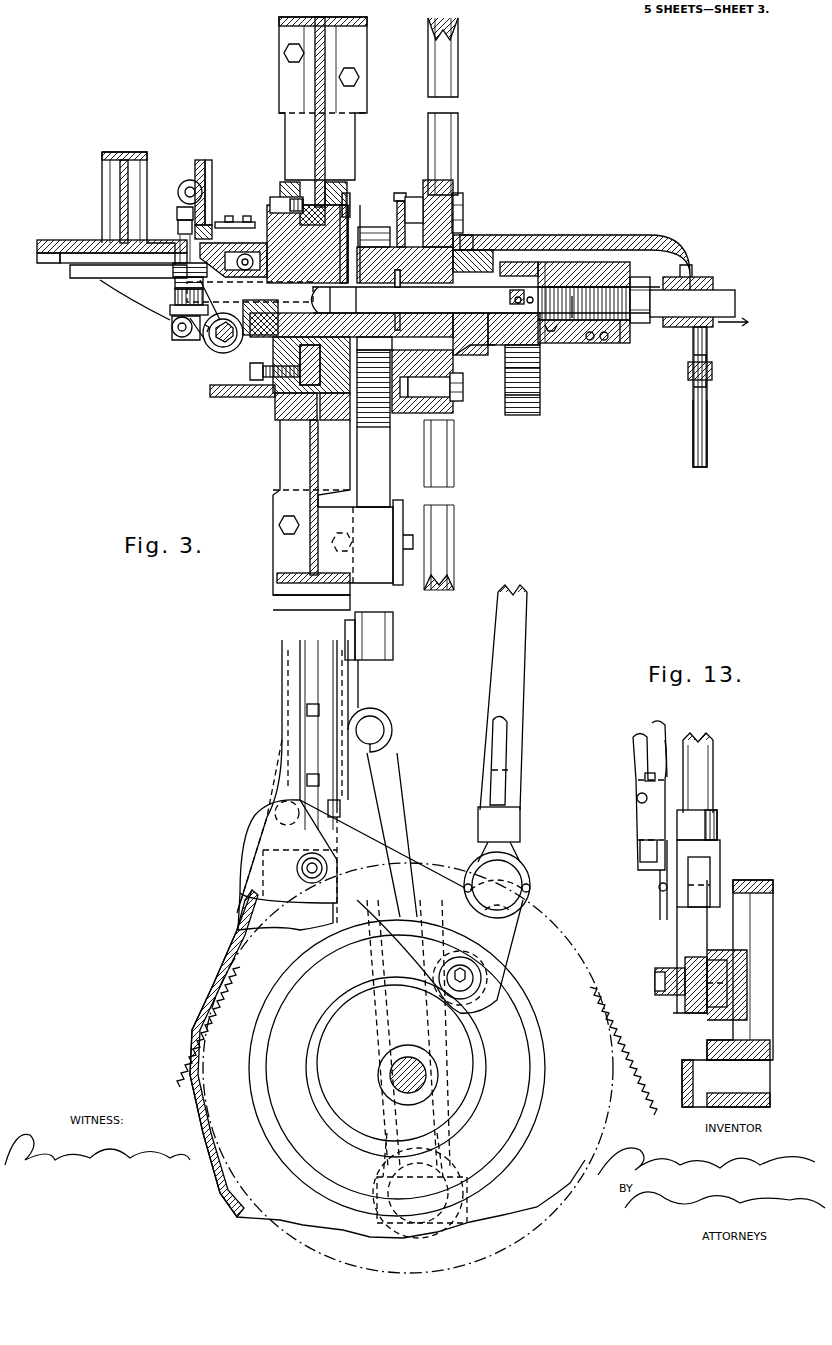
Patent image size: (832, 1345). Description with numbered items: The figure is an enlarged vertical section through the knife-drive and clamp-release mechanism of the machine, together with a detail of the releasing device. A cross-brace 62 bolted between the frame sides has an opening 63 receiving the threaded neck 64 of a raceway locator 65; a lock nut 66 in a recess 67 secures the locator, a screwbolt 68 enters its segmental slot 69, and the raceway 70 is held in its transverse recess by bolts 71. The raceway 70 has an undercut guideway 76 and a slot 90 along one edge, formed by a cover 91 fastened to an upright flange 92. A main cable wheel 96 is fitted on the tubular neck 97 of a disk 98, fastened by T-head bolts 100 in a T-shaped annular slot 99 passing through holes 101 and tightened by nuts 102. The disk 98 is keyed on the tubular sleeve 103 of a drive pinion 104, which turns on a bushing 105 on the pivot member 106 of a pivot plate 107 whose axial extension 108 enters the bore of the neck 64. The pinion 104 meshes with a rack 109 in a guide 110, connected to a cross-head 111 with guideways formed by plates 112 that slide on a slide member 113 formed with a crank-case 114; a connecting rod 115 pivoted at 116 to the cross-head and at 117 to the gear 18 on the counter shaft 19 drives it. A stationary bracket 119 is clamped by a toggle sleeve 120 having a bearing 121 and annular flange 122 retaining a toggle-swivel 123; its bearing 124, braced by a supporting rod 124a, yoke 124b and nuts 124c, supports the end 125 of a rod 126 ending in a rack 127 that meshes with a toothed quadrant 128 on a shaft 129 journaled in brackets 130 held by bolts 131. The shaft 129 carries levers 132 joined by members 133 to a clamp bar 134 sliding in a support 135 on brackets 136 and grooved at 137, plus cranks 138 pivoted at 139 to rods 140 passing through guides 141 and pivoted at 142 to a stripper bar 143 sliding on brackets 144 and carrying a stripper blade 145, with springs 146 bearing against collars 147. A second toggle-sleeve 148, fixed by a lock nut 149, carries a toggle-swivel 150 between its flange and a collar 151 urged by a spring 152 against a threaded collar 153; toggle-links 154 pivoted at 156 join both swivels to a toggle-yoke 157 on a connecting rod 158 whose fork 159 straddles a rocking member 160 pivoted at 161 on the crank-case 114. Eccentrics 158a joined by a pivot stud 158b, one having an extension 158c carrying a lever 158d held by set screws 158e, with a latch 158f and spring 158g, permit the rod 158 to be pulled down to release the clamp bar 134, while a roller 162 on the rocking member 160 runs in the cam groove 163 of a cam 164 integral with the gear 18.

In FIG. 3, the gear 18 is at (607, 1055).
In FIG. 3, the counter shaft 19 is at (392, 1067).
In FIG. 13, the counter shaft 19 is at (696, 1085).
In FIG. 3, the cross-brace 62 is at (318, 72).
In FIG. 3, the opening 63 is at (334, 204).
In FIG. 3, the neck 64 is at (329, 300).
In FIG. 3, the raceway locator 65 is at (282, 196).
In FIG. 3, the lock nut 66 is at (342, 312).
In FIG. 3, the recess 67 is at (276, 402).
In FIG. 3, the screwbolt 68 is at (272, 202).
In FIG. 3, the segmental slot 69 is at (290, 192).
In FIG. 3, the raceway 70 is at (236, 396).
In FIG. 3, the bolts 71 is at (248, 362).
In FIG. 3, the guideway 76 is at (172, 283).
In FIG. 3, the slot 90 is at (210, 256).
In FIG. 3, the cover 91 is at (252, 224).
In FIG. 3, the upright flange 92 is at (257, 256).
In FIG. 3, the main cable wheel 96 is at (456, 73).
In FIG. 3, the tubular neck 97 is at (470, 342).
In FIG. 3, the disk 98 is at (420, 422).
In FIG. 3, the annular slot 99 is at (402, 192).
In FIG. 3, the T-head bolts 100 is at (448, 206).
In FIG. 3, the holes 101 is at (455, 182).
In FIG. 3, the nuts 102 is at (464, 211).
In FIG. 3, the tubular sleeve 103 is at (388, 226).
In FIG. 3, the drive pinion 104 is at (370, 222).
In FIG. 3, the bushing 105 is at (470, 240).
In FIG. 3, the pivot member 106 is at (478, 262).
In FIG. 3, the pivot plate 107 is at (340, 402).
In FIG. 3, the axial extension 108 is at (260, 317).
In FIG. 3, the rack 109 is at (378, 455).
In FIG. 3, the guide 110 is at (382, 538).
In FIG. 3, the cross-head 111 is at (394, 642).
In FIG. 3, the plates 112 is at (318, 734).
In FIG. 3, the slide member 113 is at (342, 808).
In FIG. 3, the crank-case 114 is at (190, 1000).
In FIG. 3, the connecting rod 115 is at (402, 838).
In FIG. 3, the pivot 116 is at (378, 726).
In FIG. 3, the pivot 117 is at (470, 1182).
In FIG. 3, the stationary bracket 119 is at (632, 236).
In FIG. 3, the toggle sleeve 120 is at (520, 337).
In FIG. 3, the bearing 121 is at (584, 343).
In FIG. 3, the annular flange 122 is at (532, 268).
In FIG. 3, the toggle-swivel 123 is at (477, 359).
In FIG. 3, the bearing 124 is at (702, 288).
In FIG. 3, the supporting rod 124a is at (708, 408).
In FIG. 3, the yoke 124b is at (708, 336).
In FIG. 3, the nuts 124c is at (710, 384).
In FIG. 3, the end of rod 125 is at (726, 305).
In FIG. 3, the rod 126 is at (486, 300).
In FIG. 3, the rack 127 is at (208, 338).
In FIG. 3, the toothed quadrant 128 is at (216, 346).
In FIG. 3, the shaft 129 is at (226, 350).
In FIG. 3, the brackets 130 is at (175, 322).
In FIG. 3, the bolts 131 is at (210, 300).
In FIG. 3, the levers 132 is at (256, 292).
In FIG. 3, the members 133 is at (235, 254).
In FIG. 3, the clamp bar 134 is at (44, 265).
In FIG. 3, the support 135 is at (70, 243).
In FIG. 3, the brackets 136 is at (108, 292).
In FIG. 3, the groove 137 is at (156, 252).
In FIG. 3, the cranks 138 is at (176, 337).
In FIG. 3, the pivot 139 is at (190, 335).
In FIG. 3, the rods 140 is at (178, 306).
In FIG. 3, the guides 141 is at (176, 290).
In FIG. 3, the pivot 142 is at (190, 182).
In FIG. 3, the stripper bar 143 is at (201, 160).
In FIG. 3, the brackets 144 is at (212, 170).
In FIG. 3, the stripper blade 145 is at (213, 226).
In FIG. 3, the springs 146 is at (178, 224).
In FIG. 3, the collars 147 is at (178, 205).
In FIG. 3, the second toggle-sleeve 148 is at (575, 270).
In FIG. 3, the lock nut 149 is at (636, 278).
In FIG. 3, the toggle-swivel 150 is at (548, 334).
In FIG. 3, the collar 151 is at (590, 340).
In FIG. 3, the spring 152 is at (605, 340).
In FIG. 3, the collar 153 is at (628, 336).
In FIG. 3, the toggle-links 154 is at (488, 298).
In FIG. 3, the pivot 156 is at (511, 294).
In FIG. 3, the toggle-yoke 157 is at (540, 350).
In FIG. 3, the connecting rod 158 is at (514, 666).
In FIG. 13, the connecting rod 158 is at (702, 779).
In FIG. 13, the eccentrics 158a is at (697, 834).
In FIG. 13, the pivot stud 158b is at (722, 866).
In FIG. 3, the extension 158c is at (522, 862).
In FIG. 13, the extension 158c is at (660, 895).
In FIG. 13, the lever 158d is at (655, 810).
In FIG. 3, the set screws 158e is at (530, 887).
In FIG. 13, the set screws 158e is at (658, 886).
In FIG. 13, the latch 158f is at (640, 850).
In FIG. 13, the spring 158g is at (648, 778).
In FIG. 13, the fork 159 is at (714, 842).
In FIG. 3, the rocking member 160 is at (494, 950).
In FIG. 13, the rocking member 160 is at (692, 938).
In FIG. 3, the pivot 161 is at (300, 866).
In FIG. 3, the roller 162 is at (470, 998).
In FIG. 13, the roller 162 is at (728, 982).
In FIG. 3, the cam groove 163 is at (515, 1107).
In FIG. 13, the cam groove 163 is at (745, 1000).
In FIG. 3, the cam 164 is at (540, 1040).
In FIG. 13, the cam 164 is at (770, 930).